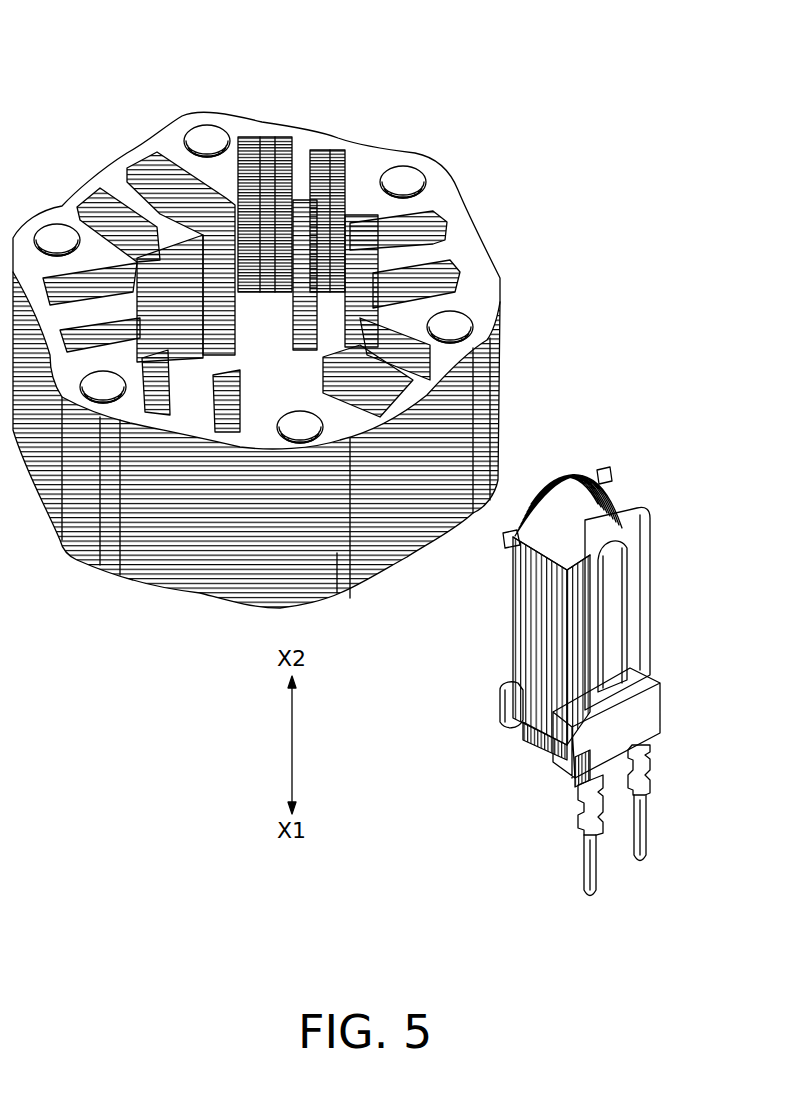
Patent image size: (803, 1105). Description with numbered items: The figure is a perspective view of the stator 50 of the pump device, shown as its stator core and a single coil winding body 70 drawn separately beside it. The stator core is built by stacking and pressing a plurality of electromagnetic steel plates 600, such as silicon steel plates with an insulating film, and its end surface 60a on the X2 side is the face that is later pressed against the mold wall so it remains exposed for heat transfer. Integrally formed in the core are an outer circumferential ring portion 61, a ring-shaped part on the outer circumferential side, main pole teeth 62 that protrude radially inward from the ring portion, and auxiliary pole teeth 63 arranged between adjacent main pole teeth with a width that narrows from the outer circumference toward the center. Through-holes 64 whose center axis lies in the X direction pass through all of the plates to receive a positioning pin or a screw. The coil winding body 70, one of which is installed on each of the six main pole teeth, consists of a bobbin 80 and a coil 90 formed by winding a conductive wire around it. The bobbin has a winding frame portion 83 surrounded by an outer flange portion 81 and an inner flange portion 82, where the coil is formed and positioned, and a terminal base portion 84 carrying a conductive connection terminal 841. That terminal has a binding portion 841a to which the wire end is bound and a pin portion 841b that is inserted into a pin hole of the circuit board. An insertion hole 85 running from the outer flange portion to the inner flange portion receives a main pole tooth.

The stator 50 is at (233, 83).
The outer circumferential ring portion 61 is at (132, 150).
The main pole teeth 62 is at (300, 183).
The auxiliary pole teeth 63 is at (370, 200).
The through-holes 64 is at (405, 180).
The end surface 60a is at (400, 310).
The electromagnetic steel plates 600 is at (483, 280).
The coil winding body 70 is at (605, 695).
The coil 90 is at (577, 507).
The bobbin 80 is at (595, 659).
The outer flange portion 81 is at (627, 533).
The inner flange portion 82 is at (513, 683).
The winding frame portion 83 is at (553, 738).
The terminal base portion 84 is at (647, 713).
The insertion hole 85 is at (605, 598).
The connection terminal 841 is at (648, 809).
The binding portion 841a is at (643, 770).
The pin portion 841b is at (646, 838).